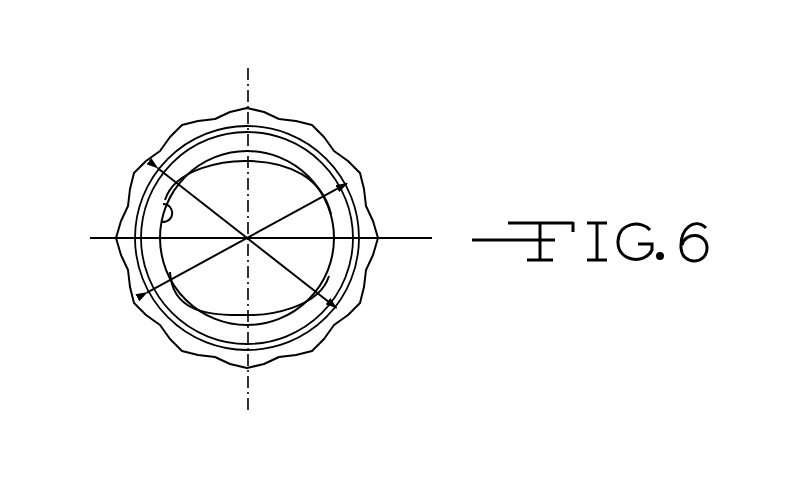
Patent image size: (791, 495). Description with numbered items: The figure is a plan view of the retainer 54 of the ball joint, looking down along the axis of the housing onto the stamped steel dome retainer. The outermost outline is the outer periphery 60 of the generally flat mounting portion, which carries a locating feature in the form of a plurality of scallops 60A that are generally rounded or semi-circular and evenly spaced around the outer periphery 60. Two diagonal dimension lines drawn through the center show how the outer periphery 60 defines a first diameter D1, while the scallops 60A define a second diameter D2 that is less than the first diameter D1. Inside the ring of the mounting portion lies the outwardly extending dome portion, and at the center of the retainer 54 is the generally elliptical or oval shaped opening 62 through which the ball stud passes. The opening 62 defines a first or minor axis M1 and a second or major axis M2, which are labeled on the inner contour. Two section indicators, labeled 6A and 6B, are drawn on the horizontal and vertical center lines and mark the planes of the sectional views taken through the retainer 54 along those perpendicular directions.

The retainer 54 is at (212, 106).
The outer periphery 60 is at (333, 140).
The scallops 60A is at (354, 155).
The opening 62 is at (160, 211).
The first diameter D1 is at (350, 184).
The second diameter D2 is at (160, 167).
The minor axis M1 is at (243, 262).
The major axis M2 is at (330, 309).
The section line 6A- 6A is at (236, 85).
The section line 6B- 6B is at (99, 236).